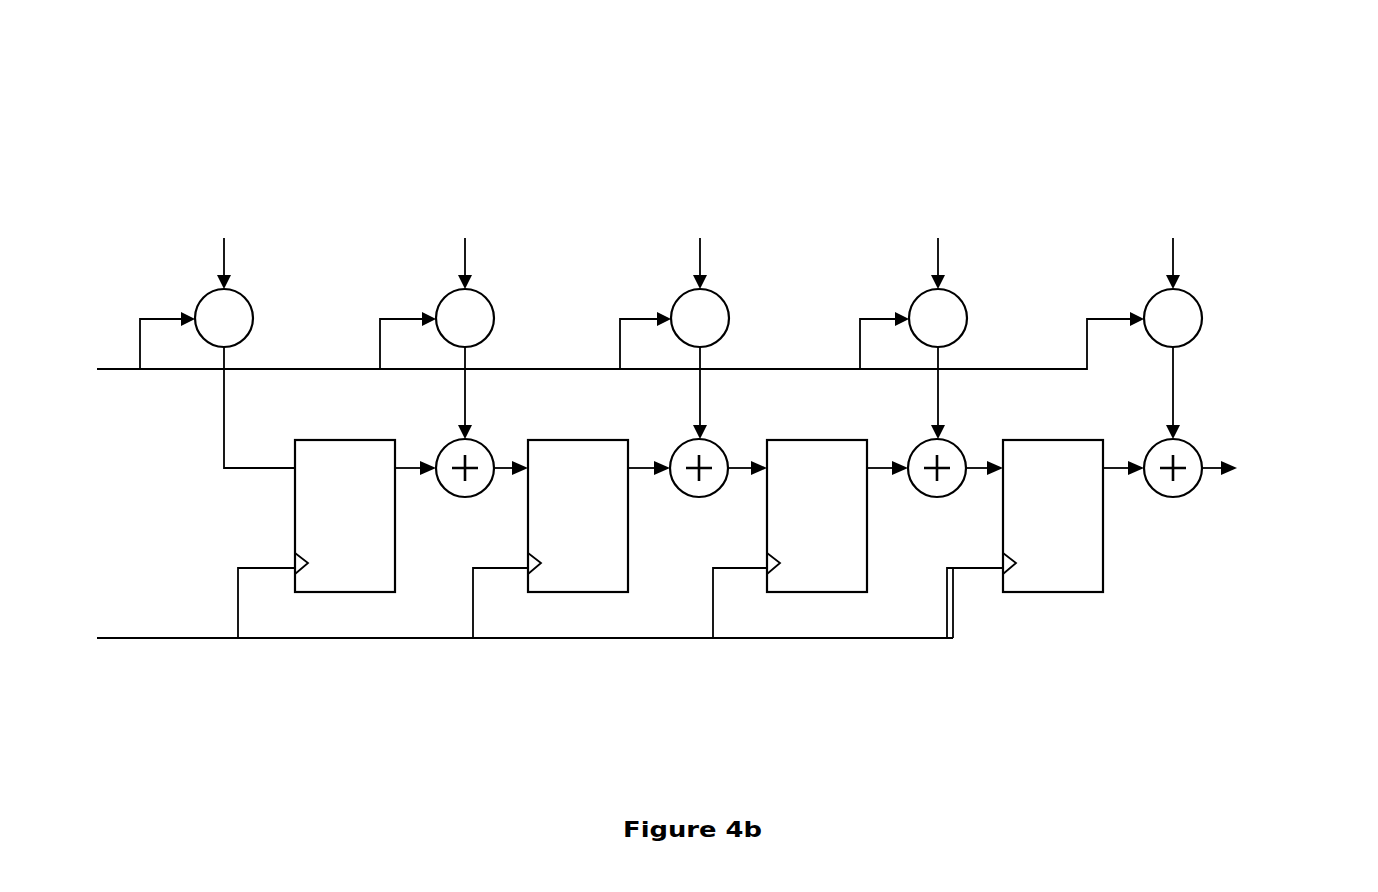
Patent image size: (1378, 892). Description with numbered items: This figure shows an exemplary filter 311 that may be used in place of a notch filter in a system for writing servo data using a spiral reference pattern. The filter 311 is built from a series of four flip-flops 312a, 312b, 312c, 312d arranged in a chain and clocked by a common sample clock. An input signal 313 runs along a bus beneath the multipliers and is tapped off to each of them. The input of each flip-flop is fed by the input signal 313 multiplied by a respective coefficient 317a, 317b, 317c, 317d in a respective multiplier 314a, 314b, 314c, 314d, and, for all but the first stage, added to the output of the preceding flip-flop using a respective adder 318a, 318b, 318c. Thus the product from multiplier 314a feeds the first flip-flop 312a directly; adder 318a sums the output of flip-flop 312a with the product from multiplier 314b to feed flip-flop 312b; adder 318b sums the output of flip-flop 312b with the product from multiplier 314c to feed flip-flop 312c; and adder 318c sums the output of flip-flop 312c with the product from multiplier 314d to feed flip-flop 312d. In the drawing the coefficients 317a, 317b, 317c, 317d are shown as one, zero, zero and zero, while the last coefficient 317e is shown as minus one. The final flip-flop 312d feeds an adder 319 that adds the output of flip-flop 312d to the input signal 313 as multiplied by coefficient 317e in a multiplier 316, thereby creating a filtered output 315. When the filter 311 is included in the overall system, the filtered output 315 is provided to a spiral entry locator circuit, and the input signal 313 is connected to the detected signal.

The filter 311 is at (213, 81).
The flip-flop 312a is at (337, 539).
The flip-flop 312b is at (571, 539).
The flip-flop 312c is at (810, 539).
The flip-flop 312d is at (1045, 539).
The input signal 313 is at (58, 347).
The multiplier 314a is at (252, 300).
The multiplier 314b is at (490, 297).
The multiplier 314c is at (725, 297).
The multiplier 314d is at (963, 300).
The filtered output 315 is at (1307, 433).
The multiplier 316 is at (1203, 332).
The coefficient 317a is at (238, 205).
The coefficient 317b is at (478, 203).
The coefficient 317c is at (713, 203).
The coefficient 317d is at (951, 203).
The coefficient 317e is at (1183, 208).
The adder 318a is at (467, 498).
The adder 318b is at (701, 498).
The adder 318c is at (939, 498).
The adder 319 is at (1190, 500).